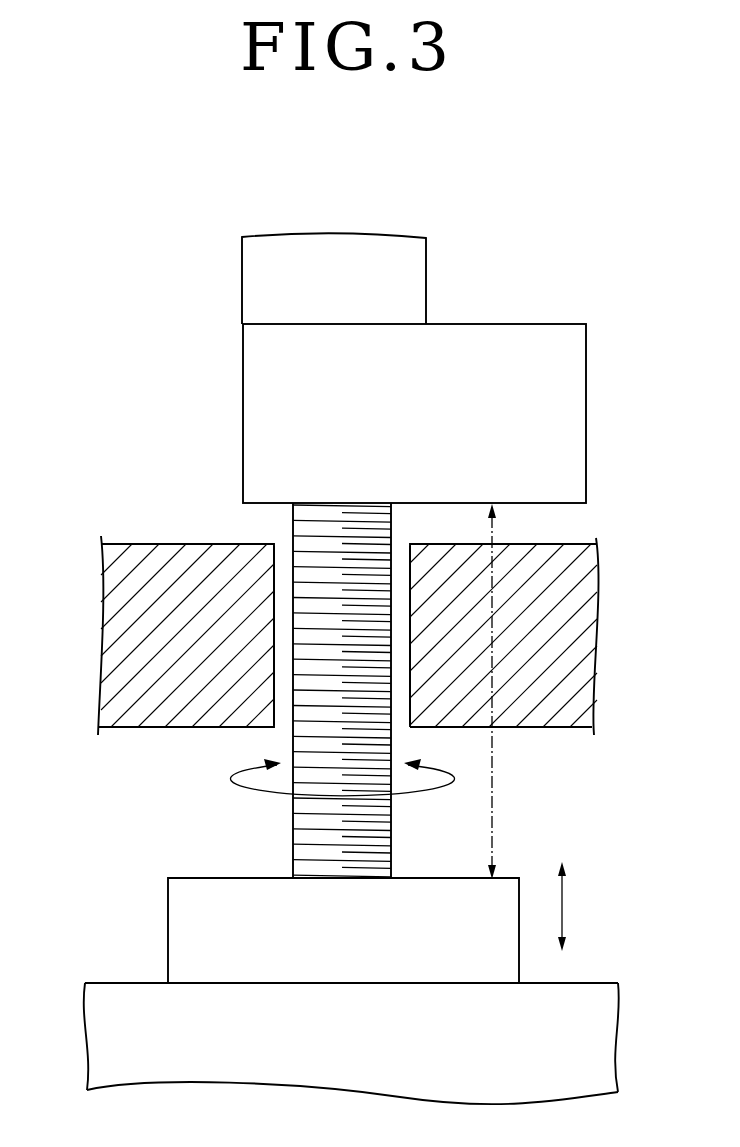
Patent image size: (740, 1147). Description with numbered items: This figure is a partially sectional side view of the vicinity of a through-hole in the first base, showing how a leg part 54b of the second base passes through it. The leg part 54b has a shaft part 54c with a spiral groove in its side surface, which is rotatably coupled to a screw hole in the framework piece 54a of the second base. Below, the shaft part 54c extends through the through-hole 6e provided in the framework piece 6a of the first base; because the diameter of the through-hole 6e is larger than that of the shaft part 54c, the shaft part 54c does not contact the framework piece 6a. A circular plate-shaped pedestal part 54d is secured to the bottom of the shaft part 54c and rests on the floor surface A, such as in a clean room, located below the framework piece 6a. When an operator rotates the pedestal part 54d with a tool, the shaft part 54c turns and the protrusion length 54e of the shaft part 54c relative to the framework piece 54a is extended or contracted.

The framework piece 54a is at (248, 367).
The leg part 54b is at (266, 524).
The shaft part 54c is at (300, 822).
The pedestal part 54d is at (178, 910).
The protrusion length 54e is at (494, 805).
The framework piece 6a is at (120, 552).
The through-hole 6e is at (402, 562).
The floor surface A is at (597, 983).